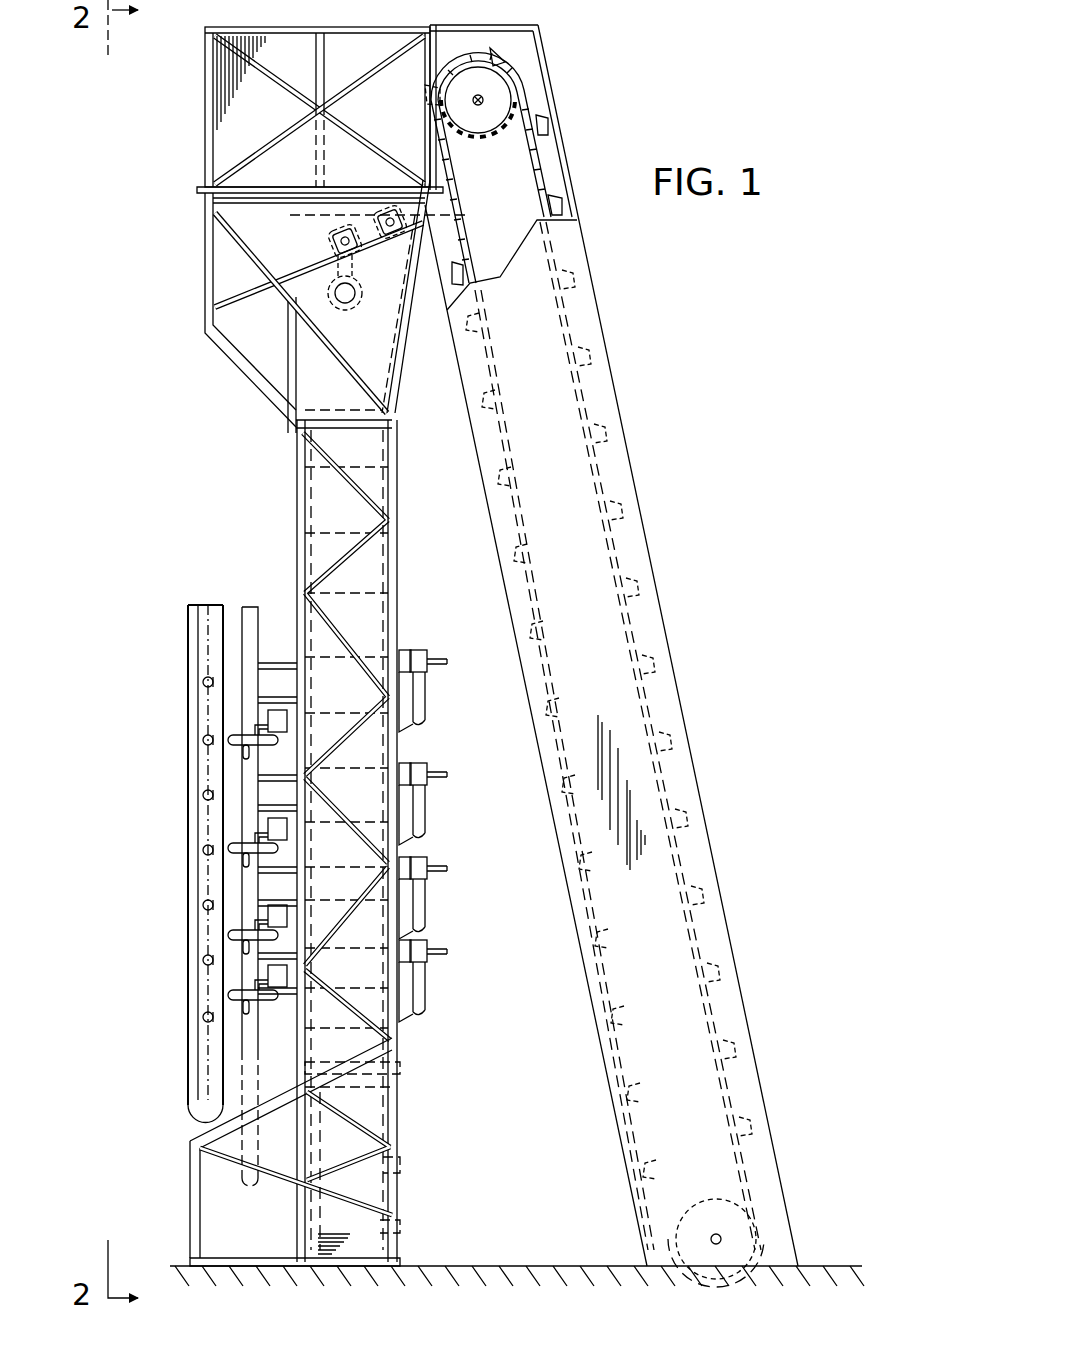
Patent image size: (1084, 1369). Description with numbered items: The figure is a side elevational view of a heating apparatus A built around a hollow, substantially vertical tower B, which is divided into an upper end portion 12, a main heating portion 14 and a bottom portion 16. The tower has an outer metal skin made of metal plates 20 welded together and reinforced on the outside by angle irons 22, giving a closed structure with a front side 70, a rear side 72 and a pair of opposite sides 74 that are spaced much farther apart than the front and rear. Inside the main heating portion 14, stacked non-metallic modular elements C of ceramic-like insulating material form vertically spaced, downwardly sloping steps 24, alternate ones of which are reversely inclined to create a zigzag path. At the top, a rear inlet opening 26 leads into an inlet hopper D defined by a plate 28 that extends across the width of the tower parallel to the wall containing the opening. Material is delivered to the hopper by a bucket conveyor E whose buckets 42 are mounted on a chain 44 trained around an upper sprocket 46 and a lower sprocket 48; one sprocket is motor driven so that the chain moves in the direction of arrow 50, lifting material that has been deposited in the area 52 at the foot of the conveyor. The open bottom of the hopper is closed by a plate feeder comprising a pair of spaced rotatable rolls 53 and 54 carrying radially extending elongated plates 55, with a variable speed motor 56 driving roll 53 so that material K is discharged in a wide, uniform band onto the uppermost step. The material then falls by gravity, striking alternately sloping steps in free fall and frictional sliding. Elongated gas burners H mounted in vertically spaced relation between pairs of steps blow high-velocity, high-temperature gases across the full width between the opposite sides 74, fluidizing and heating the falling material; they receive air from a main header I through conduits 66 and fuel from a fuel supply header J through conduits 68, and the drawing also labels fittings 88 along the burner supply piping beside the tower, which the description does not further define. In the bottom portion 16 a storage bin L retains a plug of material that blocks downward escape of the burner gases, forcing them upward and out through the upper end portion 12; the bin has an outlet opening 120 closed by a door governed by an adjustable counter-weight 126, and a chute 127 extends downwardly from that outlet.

The upper end portion 12 is at (342, 50).
The main heating portion 14 is at (404, 744).
The bottom portion 16 is at (374, 1186).
The metal plates 20 is at (234, 55).
The angle irons 22 is at (212, 72).
The steps 24 is at (303, 520).
The rear inlet opening 26 is at (436, 55).
The plate 28 is at (303, 132).
The buckets 42 is at (542, 120).
The chain 44 is at (568, 322).
The upper sprocket 46 is at (476, 132).
The lower sprocket 48 is at (745, 1200).
The arrow 50 is at (555, 158).
The material deposit area 52 is at (778, 1247).
The roll 53 is at (333, 240).
The roll 54 is at (440, 216).
The elongated plates 55 is at (345, 230).
The variable speed motor 56 is at (355, 305).
The conduits 66 is at (212, 665).
The conduits 68 is at (265, 850).
The front side 70 is at (262, 1047).
The rear side 72 is at (400, 1077).
The opposite sides 74 is at (397, 1062).
The valve 88 is at (262, 718).
The outlet opening 120 is at (400, 1226).
The adjustable counter-weight 126 is at (400, 1168).
The chute 127 is at (343, 1250).
The heating apparatus A is at (188, 299).
The tower B is at (400, 466).
The modular elements C is at (382, 628).
The inlet hopper D is at (400, 76).
The bucket conveyor E is at (532, 78).
The gas burners H is at (422, 663).
The main header I is at (315, 909).
The fuel supply header J is at (243, 1186).
The material K is at (363, 166).
The storage bin L is at (394, 1111).